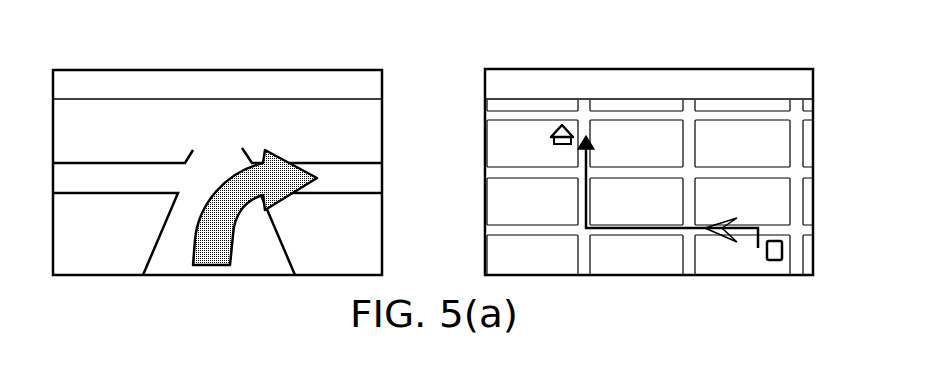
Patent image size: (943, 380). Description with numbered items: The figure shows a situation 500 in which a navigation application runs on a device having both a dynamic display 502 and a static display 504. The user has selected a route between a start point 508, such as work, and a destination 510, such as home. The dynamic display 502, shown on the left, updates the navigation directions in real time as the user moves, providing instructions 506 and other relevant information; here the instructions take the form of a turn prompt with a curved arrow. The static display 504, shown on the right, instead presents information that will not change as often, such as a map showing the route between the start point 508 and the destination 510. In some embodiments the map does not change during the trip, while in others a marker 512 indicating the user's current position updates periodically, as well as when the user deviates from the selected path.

The situation 500 is at (443, 167).
The dynamic display 502 is at (220, 178).
The static display 504 is at (628, 177).
The instructions 506 is at (203, 267).
The start point 508 is at (777, 262).
The destination 510 is at (552, 137).
The marker 512 is at (716, 232).